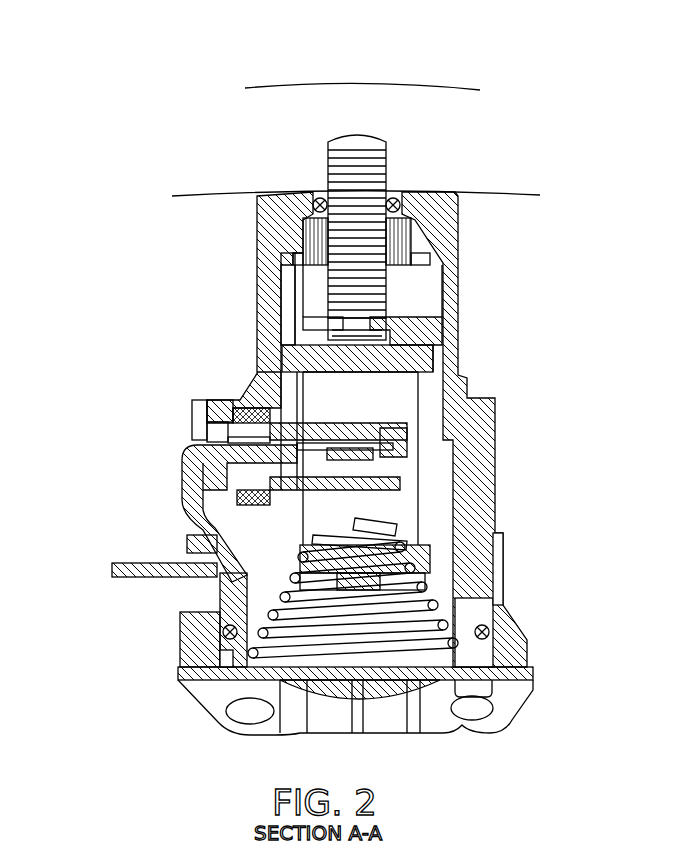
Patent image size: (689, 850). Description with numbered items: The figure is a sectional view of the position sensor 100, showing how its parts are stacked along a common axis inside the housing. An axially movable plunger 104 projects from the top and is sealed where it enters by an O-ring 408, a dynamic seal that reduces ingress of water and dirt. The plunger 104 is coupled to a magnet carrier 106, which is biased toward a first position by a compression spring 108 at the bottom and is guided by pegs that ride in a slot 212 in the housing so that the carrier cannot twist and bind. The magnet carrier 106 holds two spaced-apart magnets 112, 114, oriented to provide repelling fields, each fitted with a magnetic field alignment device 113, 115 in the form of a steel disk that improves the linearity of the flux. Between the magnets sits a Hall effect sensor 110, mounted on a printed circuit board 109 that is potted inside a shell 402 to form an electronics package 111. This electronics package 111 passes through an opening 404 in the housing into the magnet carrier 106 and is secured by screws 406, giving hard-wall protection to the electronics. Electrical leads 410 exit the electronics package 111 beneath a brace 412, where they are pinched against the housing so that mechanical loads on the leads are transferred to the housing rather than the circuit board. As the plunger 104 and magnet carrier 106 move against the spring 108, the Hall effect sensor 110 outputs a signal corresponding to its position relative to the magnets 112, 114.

The position sensor 100 is at (170, 66).
The plunger 104 is at (328, 162).
The O-ring 408 is at (395, 196).
The slot 212 is at (287, 273).
The magnet carrier 106 is at (440, 330).
The magnet 112 is at (282, 350).
The magnetic field alignment device 113 is at (284, 360).
The opening 404 is at (263, 410).
The screws 406 is at (192, 420).
The electronics package 111 is at (352, 421).
The printed circuit board 109 is at (400, 428).
The Hall effect sensor 110 is at (395, 450).
The shell 402 is at (397, 486).
The brace 412 is at (186, 545).
The electrical leads 410 is at (112, 568).
The magnetic field alignment device 115 is at (433, 556).
The magnet 114 is at (433, 558).
The compression spring 108 is at (447, 624).